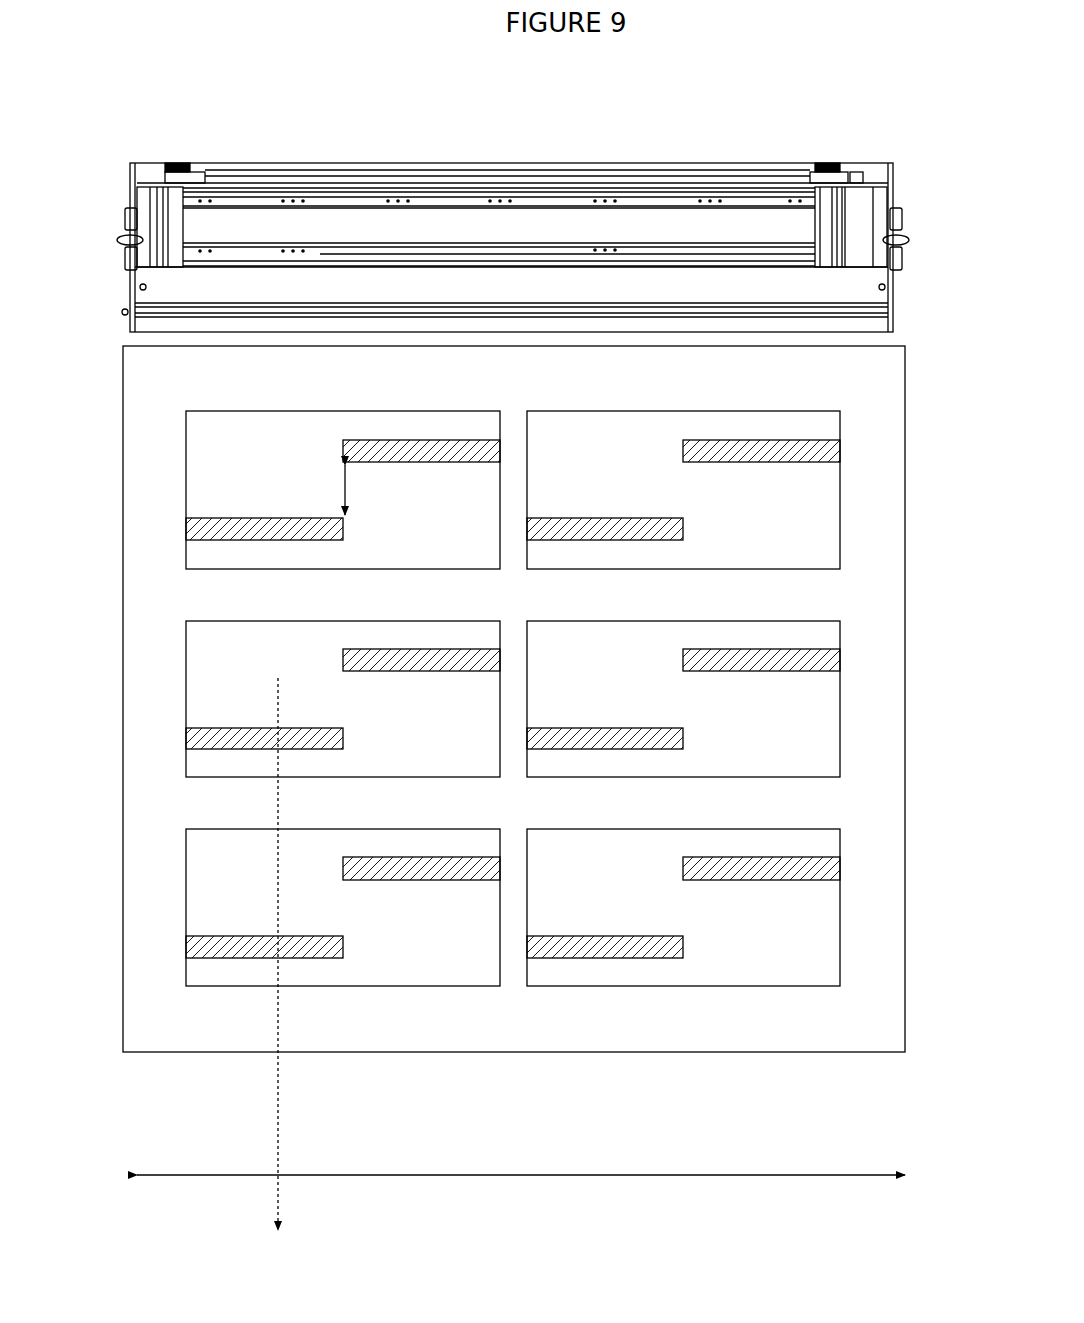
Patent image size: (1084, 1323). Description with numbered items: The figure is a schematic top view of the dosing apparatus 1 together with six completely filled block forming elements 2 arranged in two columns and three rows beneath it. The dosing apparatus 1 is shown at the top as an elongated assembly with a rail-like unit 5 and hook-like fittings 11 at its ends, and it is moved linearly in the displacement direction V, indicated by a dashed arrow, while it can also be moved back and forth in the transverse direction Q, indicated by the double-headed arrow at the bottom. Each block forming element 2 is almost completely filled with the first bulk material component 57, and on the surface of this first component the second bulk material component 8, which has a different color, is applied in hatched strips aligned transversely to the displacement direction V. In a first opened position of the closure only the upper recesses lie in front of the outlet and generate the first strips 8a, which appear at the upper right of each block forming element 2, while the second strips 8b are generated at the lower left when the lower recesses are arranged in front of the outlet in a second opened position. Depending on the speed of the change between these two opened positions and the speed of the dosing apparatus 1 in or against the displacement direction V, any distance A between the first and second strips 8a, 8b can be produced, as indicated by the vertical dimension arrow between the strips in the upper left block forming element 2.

The dosing apparatus 1 is at (202, 134).
The block forming element 2 is at (501, 782).
The guide rail unit 5 is at (716, 222).
The second bulk material component 8 is at (571, 671).
The first strips 8a is at (440, 458).
The second strips 8b is at (240, 522).
The suspension hook 11 is at (903, 222).
The first bulk material component 57 is at (777, 560).
The distance A is at (348, 487).
The displacement direction V is at (280, 1128).
The transverse direction Q is at (179, 1175).